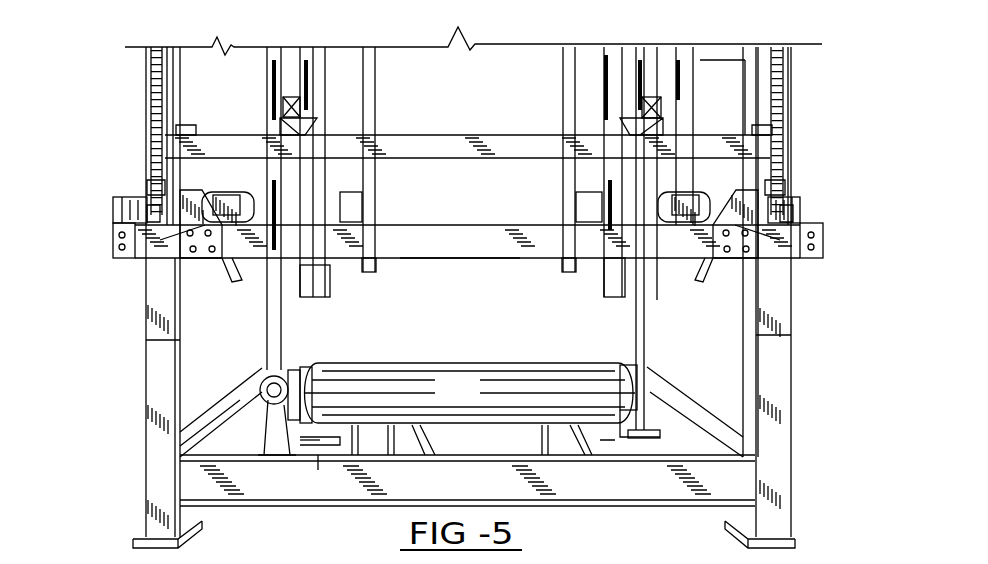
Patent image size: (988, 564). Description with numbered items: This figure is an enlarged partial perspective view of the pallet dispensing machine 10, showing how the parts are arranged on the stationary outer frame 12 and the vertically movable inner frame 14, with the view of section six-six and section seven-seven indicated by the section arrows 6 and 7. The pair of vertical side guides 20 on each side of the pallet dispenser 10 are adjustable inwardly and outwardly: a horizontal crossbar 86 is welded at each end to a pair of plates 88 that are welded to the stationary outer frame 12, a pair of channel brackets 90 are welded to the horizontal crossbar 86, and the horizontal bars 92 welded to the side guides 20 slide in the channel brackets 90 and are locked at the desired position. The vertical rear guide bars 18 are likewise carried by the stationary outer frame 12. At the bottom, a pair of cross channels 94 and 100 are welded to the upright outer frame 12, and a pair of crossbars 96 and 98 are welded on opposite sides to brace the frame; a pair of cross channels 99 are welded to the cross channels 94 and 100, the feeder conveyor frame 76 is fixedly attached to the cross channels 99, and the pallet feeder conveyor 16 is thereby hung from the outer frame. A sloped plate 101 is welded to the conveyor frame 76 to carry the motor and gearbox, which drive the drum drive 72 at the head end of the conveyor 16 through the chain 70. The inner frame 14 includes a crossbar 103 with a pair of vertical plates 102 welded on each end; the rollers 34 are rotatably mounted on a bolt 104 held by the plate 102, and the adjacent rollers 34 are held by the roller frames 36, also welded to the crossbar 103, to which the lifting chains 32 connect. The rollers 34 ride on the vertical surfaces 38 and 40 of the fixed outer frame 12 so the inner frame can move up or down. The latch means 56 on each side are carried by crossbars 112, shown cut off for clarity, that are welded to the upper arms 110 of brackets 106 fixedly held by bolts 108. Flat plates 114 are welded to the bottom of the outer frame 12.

The pallet dispensing machine 10 is at (120, 449).
The stationary outer frame 12 is at (262, 60).
The vertically movable inner frame 14 is at (465, 258).
The pallet feeder conveyor 16 is at (440, 400).
The vertical rear guide bars 18 is at (722, 56).
The adjustable side guides 20 is at (318, 53).
The chains 32 is at (148, 110).
The rollers 34 is at (148, 212).
The roller frame 36 is at (113, 222).
The vertical surface 38 is at (148, 72).
The vertical surface 40 is at (153, 346).
The latch means 56 is at (236, 280).
The chain 70 is at (262, 420).
The drum drive 72 is at (283, 362).
The feeder conveyor frame 76 is at (390, 438).
The horizontal crossbar 86 is at (465, 135).
The plates 88 is at (176, 130).
The channel brackets 90 is at (330, 120).
The horizontal bars 92 is at (330, 78).
The cross channel 94 is at (427, 495).
The crossbar 96 is at (226, 394).
The crossbar 98 is at (670, 368).
The cross channels 99 is at (323, 470).
The cross channel 100 is at (636, 360).
The sloped plate 101 is at (315, 440).
The vertical plates 102 is at (148, 185).
The crossbar 103 is at (436, 255).
The bolt 104 is at (113, 205).
The brackets 106 is at (172, 248).
The bolts 108 is at (185, 258).
The upper arms 110 is at (196, 190).
The crossbars 112 is at (332, 204).
The flat plates 114 is at (140, 538).
The section line 6- 6 is at (98, 42).
The section line 7- 7 is at (65, 177).